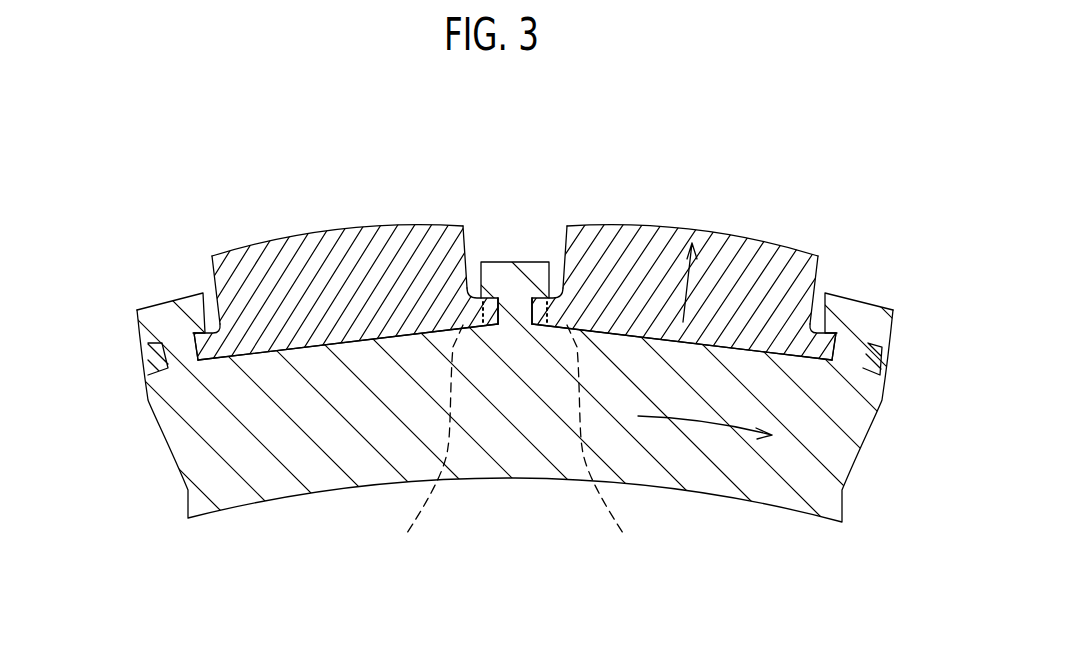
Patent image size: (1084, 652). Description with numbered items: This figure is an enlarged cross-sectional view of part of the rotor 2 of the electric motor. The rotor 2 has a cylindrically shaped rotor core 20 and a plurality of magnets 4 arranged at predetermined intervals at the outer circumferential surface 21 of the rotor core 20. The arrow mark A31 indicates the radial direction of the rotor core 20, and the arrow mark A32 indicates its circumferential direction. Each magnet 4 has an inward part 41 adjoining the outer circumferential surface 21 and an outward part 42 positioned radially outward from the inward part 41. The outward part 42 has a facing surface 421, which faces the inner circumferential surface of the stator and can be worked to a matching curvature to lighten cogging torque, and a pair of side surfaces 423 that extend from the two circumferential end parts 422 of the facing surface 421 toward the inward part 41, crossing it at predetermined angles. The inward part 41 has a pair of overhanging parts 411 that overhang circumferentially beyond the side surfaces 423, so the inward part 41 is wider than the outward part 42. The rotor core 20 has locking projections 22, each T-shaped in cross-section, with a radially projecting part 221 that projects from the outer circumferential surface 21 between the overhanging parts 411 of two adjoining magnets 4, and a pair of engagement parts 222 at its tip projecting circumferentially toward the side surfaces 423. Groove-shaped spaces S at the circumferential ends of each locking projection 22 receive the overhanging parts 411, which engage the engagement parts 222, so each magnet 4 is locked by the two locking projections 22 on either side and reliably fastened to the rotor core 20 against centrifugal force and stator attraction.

The rotor 2 is at (119, 104).
The rotor core 20 is at (795, 473).
The outer circumferential surface 21 is at (390, 333).
The locking projection 22 is at (182, 295).
The radially projecting part 221 is at (512, 312).
The engagement part 222 is at (484, 262).
The magnet 4 is at (536, 334).
The inward part 41 is at (313, 326).
The overhanging part 411 is at (206, 336).
The outward part 42 is at (313, 268).
The facing surface 421 is at (385, 223).
The end part 422 is at (212, 255).
The side surface 423 is at (233, 274).
The arrow mark A31 is at (695, 287).
The arrow mark A32 is at (697, 425).
The groove-shaped space S is at (516, 441).